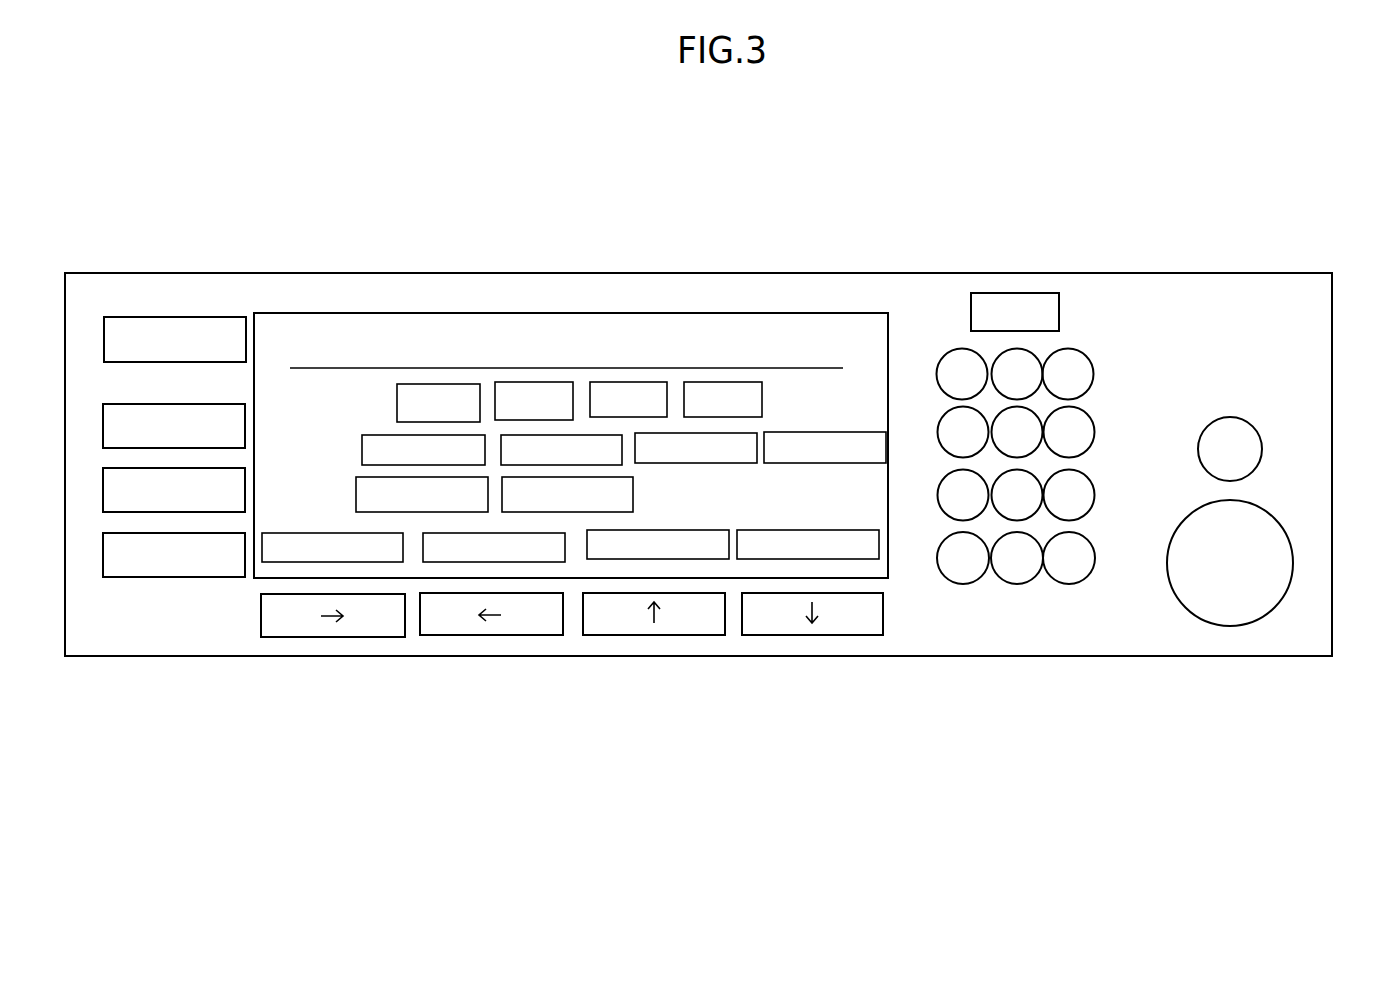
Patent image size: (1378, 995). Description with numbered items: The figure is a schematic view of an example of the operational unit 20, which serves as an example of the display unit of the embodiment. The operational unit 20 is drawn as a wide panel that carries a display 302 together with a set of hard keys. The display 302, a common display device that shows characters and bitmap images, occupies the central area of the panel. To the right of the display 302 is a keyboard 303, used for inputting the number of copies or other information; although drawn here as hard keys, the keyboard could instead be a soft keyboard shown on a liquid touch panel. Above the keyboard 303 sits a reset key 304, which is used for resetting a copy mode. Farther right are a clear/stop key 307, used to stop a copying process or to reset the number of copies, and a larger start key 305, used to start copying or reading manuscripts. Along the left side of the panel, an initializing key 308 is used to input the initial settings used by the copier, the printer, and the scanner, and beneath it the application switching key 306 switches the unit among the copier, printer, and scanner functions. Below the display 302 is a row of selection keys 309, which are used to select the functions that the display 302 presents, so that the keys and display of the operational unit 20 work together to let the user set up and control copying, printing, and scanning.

The operational unit 20 is at (108, 273).
The display 302 is at (417, 312).
The keyboard 303 is at (960, 368).
The reset key 304 is at (1033, 310).
The start key 305 is at (1230, 563).
The application switching key 306 is at (198, 577).
The clear/stop key 307 is at (1231, 447).
The initializing key 308 is at (225, 315).
The selection keys 309 is at (332, 638).